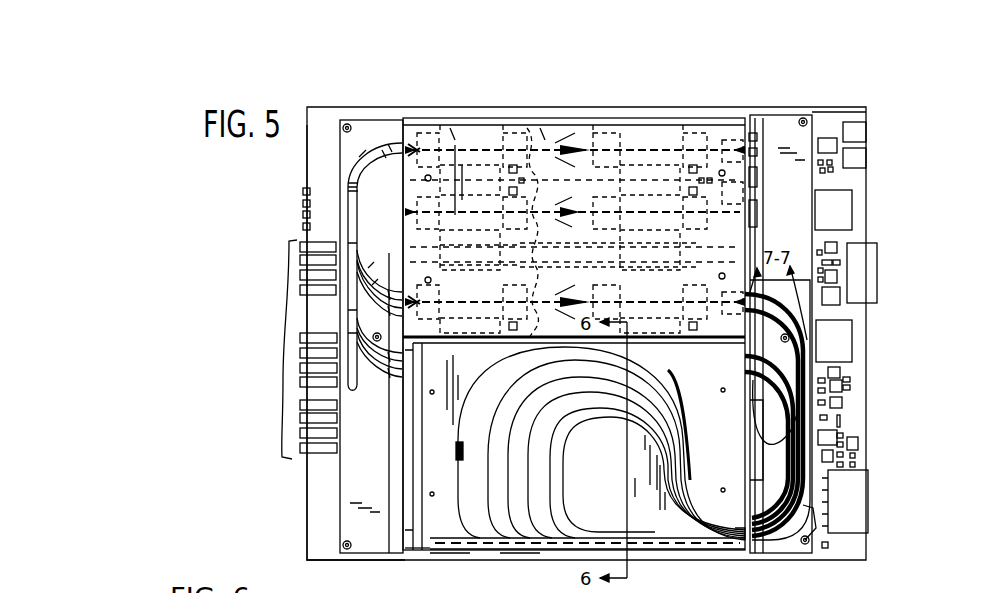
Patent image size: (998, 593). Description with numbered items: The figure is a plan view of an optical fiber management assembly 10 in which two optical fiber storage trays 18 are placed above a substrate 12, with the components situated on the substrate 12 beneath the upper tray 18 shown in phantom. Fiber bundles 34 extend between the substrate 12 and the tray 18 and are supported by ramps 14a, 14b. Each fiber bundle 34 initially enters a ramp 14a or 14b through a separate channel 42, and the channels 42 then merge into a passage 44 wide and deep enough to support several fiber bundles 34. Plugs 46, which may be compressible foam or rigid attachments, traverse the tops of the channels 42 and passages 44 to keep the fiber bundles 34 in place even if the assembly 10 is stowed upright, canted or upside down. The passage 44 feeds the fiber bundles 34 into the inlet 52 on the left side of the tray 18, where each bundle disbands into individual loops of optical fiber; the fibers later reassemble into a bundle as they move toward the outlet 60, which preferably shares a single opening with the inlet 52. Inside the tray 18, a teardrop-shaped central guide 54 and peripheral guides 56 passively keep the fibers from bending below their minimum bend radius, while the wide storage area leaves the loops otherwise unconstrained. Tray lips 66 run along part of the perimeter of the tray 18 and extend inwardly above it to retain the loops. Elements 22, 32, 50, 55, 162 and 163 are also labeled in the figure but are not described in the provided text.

The assembly 10 is at (724, 80).
The substrate 12 is at (313, 492).
The ramp 14a is at (371, 336).
The ramp 14b is at (784, 127).
The optical fiber storage tray 18 is at (413, 128).
The circuit board components 22 is at (886, 147).
The connector array 32 is at (283, 353).
The fiber bundle 34 is at (763, 548).
The channel 42 is at (376, 277).
The passage 44 is at (356, 181).
The plug 46 is at (362, 151).
The fiber retainer 50 is at (456, 434).
The inlet 52 is at (733, 531).
The central guide 54 is at (672, 468).
The tray bottom wall 55 is at (445, 522).
The peripheral guide 56 is at (667, 367).
The outlet 60 is at (736, 588).
The tray lip 66 is at (440, 348).
The fiber loop 162 is at (500, 368).
The fiber loop 163 is at (520, 392).